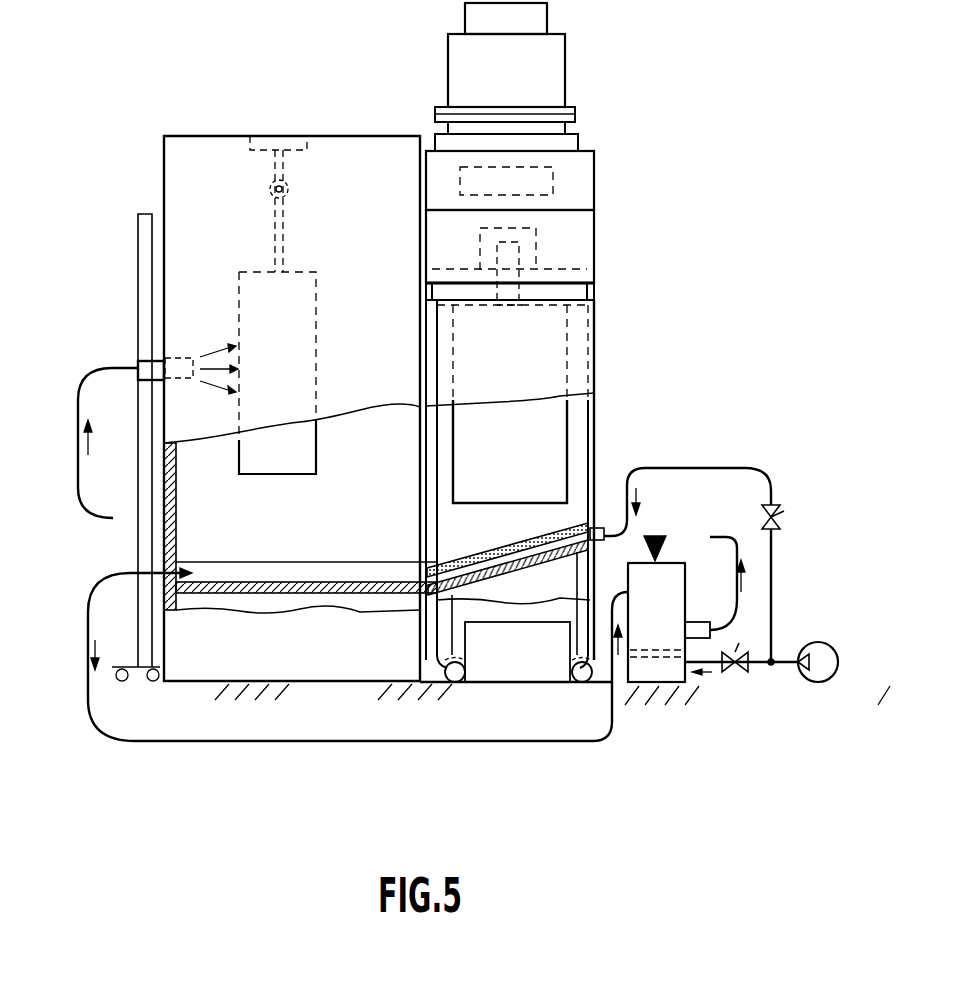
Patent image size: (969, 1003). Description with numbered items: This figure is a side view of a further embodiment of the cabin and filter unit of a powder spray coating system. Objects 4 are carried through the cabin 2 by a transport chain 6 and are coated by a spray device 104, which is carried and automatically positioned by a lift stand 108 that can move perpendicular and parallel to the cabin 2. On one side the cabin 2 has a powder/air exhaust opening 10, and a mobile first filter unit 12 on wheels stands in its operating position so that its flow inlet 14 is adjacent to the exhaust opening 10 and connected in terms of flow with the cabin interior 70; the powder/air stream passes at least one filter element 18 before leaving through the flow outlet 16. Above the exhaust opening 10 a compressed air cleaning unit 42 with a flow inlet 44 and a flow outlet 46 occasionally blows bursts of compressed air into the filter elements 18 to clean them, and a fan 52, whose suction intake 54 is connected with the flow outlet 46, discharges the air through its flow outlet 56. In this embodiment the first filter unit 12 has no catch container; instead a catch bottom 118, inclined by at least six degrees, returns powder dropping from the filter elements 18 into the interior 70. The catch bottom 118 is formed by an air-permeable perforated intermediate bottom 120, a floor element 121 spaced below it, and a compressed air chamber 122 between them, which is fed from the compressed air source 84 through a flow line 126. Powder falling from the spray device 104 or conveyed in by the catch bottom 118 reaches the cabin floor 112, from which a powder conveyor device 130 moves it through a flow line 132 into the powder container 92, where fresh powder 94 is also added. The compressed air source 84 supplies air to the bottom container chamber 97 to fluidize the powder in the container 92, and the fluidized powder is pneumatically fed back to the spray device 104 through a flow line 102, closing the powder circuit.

The cabin 2 is at (168, 172).
The objects 4 is at (252, 294).
The transport chain 6 is at (272, 170).
The powder/air exhaust opening 10 is at (423, 480).
The first filter unit 12 is at (597, 352).
The flow inlet 14 is at (430, 468).
The flow outlet 16 is at (508, 288).
The filter element 18 is at (548, 428).
The compressed air cleaning unit 42 is at (577, 236).
The flow inlet 44 is at (578, 293).
The flow outlet 46 is at (545, 182).
The fan 52 is at (548, 72).
The suction intake 54 is at (577, 112).
The flow outlet 56 is at (545, 34).
The interior 70 is at (193, 535).
The compressed air source 84 is at (814, 680).
The powder container 92 is at (660, 598).
The fresh powder 94 is at (657, 536).
The bottom container chamber 97 is at (672, 675).
The flow line 102 is at (84, 500).
The spray device 104 is at (140, 362).
The lift stand 108 is at (148, 244).
The cabin floor 112 is at (238, 588).
The catch bottom 118 is at (572, 520).
The air-permeable perforated intermediate bottom 120 is at (478, 558).
The floor element 121 is at (496, 565).
The compressed air chamber 122 is at (545, 552).
The flow line 126 is at (772, 566).
The powder conveyor device 130 is at (288, 573).
The flow line 132 is at (373, 745).